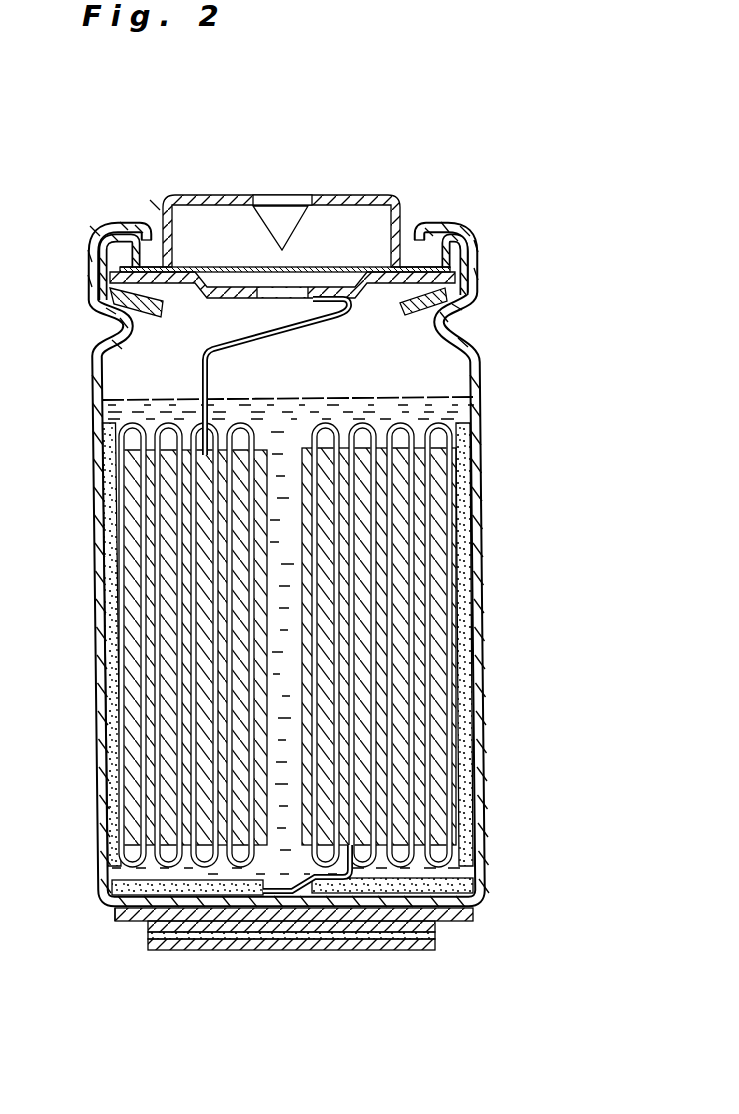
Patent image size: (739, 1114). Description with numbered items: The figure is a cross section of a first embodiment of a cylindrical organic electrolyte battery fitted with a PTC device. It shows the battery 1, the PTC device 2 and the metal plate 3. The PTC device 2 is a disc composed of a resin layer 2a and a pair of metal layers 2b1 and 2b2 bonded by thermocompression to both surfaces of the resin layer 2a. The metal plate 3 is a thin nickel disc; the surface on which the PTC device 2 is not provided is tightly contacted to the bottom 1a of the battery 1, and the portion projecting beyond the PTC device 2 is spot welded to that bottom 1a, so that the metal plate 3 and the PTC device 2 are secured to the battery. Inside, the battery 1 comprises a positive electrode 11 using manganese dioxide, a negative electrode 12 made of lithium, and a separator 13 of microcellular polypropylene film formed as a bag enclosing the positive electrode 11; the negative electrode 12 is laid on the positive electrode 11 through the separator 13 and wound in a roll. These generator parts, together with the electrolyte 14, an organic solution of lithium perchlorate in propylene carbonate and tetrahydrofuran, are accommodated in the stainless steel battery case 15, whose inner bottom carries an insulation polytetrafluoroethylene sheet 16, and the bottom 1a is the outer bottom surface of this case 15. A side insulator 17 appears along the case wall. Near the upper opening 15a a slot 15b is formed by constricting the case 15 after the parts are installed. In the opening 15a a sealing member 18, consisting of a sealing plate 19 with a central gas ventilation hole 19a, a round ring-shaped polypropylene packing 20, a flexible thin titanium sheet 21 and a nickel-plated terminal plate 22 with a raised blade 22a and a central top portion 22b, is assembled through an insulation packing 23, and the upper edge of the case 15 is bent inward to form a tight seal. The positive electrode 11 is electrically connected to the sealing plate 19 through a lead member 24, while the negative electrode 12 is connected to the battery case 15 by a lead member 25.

The battery 1 is at (100, 646).
The bottom of the battery 1a is at (135, 921).
The PTC device 2 is at (296, 998).
The resin layer 2a is at (317, 947).
The metal layer 2b1 is at (275, 926).
The metal layer 2b2 is at (233, 1012).
The metal plate 3 is at (268, 966).
The positive electrode 11 is at (363, 538).
The negative electrode 12 is at (347, 595).
The separator 13 is at (378, 652).
The electrolyte 14 is at (440, 410).
The battery case 15 is at (311, 507).
The upper opening of the battery case 15a is at (408, 222).
The slot 15b is at (447, 316).
The insulation polytetrafluoroethylene sheet 16 is at (473, 887).
The side insulator 17 is at (465, 776).
The sealing member 18 is at (190, 196).
The sealing plate 19 is at (217, 294).
The gas ventilation hole 19a is at (280, 299).
The packing 20 is at (478, 255).
The flexible thin sheet 21 is at (308, 268).
The terminal plate 22 is at (358, 198).
The blade 22a is at (280, 225).
The cap top portion 22b is at (270, 200).
The insulation packing 23 is at (480, 272).
The lead member 24 is at (460, 336).
The lead member 25 is at (340, 877).